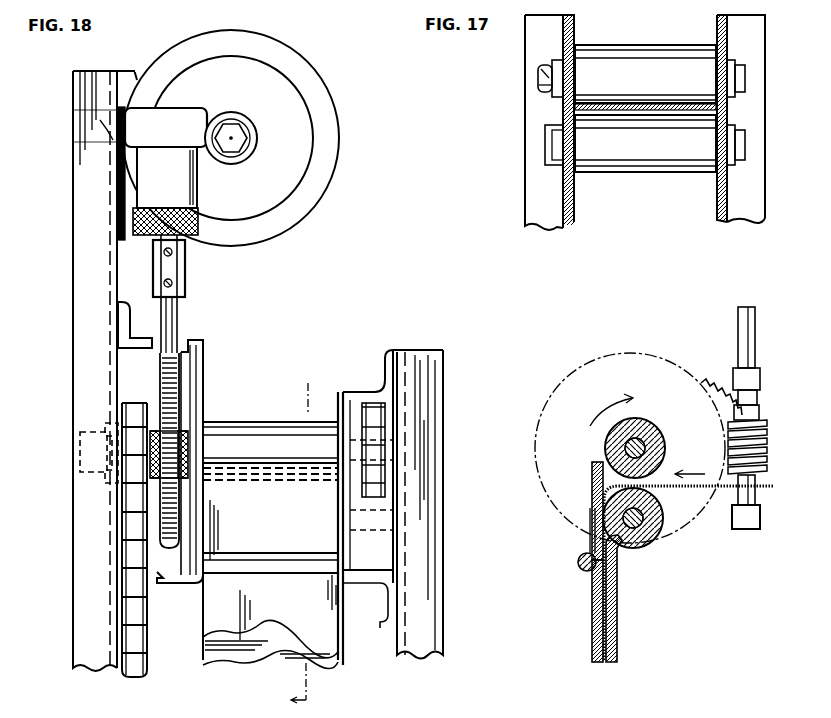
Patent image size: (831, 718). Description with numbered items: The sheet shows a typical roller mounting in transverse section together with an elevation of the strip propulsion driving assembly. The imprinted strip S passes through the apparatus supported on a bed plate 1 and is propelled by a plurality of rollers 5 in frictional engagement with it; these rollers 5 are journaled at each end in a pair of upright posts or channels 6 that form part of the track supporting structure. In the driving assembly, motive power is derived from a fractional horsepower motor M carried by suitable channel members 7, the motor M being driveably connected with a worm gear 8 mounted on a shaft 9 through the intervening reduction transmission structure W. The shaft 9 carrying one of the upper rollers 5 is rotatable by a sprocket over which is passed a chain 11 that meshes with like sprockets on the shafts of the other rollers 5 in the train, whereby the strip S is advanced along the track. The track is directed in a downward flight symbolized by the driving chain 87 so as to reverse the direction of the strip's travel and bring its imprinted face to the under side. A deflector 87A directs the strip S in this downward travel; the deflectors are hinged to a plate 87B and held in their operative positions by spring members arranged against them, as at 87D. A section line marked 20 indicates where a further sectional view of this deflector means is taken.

In FIG. 17, the bed plate 1 is at (617, 612).
In FIG. 18, the rollers 5 is at (267, 422).
In FIG. 17, the rollers 5 is at (613, 47).
In FIG. 17, the upright posts or channels 6 is at (575, 207).
In FIG. 18, the channel members 7 is at (75, 568).
In FIG. 18, the worm gear 8 is at (160, 378).
In FIG. 17, the worm gear 8 is at (556, 389).
In FIG. 18, the shaft 9 is at (80, 452).
In FIG. 17, the shaft 9 is at (665, 443).
In FIG. 18, the chain 11 is at (375, 407).
In FIG. 18, the section line 20 is at (301, 540).
In FIG. 18, the driving chain 87 is at (147, 658).
In FIG. 18, the deflector 87A is at (270, 561).
In FIG. 17, the deflector 87A is at (592, 482).
In FIG. 18, the plate 87B is at (347, 650).
In FIG. 17, the plate 87B is at (594, 623).
In FIG. 17, the spring members 87D is at (587, 548).
In FIG. 18, the motor M is at (303, 219).
In FIG. 18, the strip S is at (277, 662).
In FIG. 17, the strip S is at (642, 103).
In FIG. 18, the reduction transmission structure W is at (197, 230).